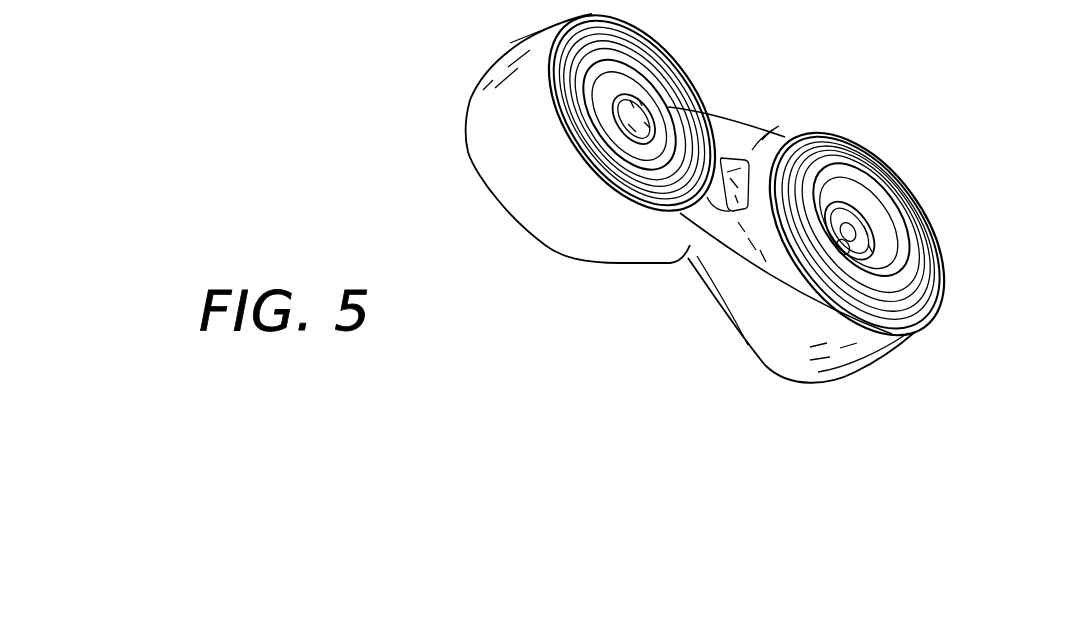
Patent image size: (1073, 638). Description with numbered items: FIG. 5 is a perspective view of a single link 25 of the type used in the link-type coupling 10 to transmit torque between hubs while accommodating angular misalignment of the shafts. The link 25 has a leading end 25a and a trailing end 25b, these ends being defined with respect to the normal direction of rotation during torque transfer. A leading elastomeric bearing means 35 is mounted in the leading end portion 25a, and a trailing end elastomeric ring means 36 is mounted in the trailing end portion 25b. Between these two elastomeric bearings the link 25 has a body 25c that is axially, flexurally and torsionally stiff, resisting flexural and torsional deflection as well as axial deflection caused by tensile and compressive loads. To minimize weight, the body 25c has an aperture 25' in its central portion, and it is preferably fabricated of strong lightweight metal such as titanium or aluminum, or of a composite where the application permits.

The coupling 10 is at (698, 422).
The link 25 is at (713, 198).
The aperture 25' is at (754, 134).
The leading end 25a is at (927, 310).
The trailing end 25b is at (473, 135).
The body 25c is at (702, 240).
The leading elastomeric bearing means 35 is at (910, 222).
The trailing end elastomeric ring means 36 is at (627, 43).